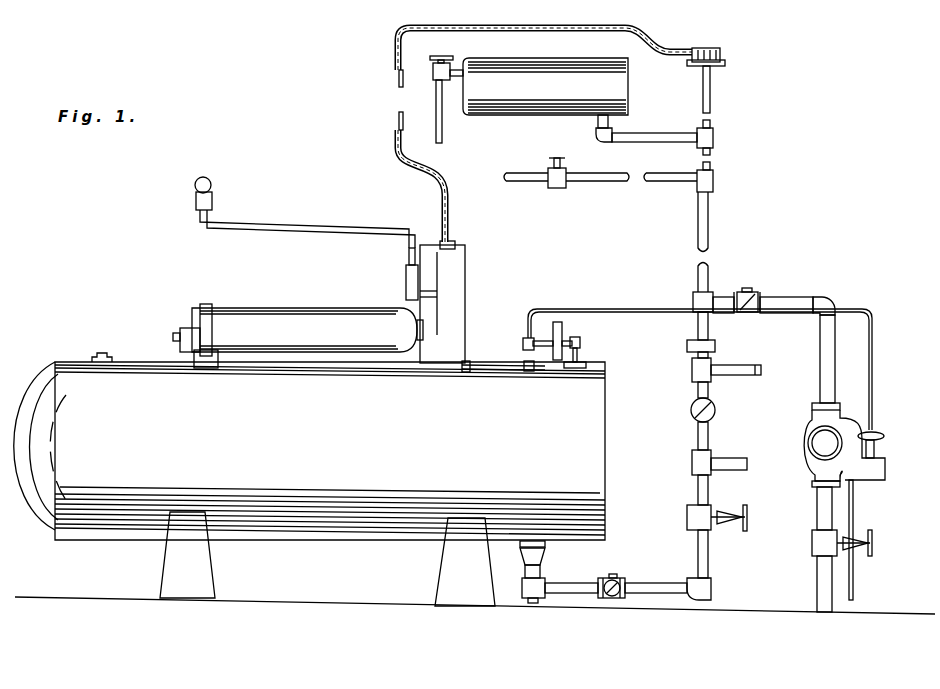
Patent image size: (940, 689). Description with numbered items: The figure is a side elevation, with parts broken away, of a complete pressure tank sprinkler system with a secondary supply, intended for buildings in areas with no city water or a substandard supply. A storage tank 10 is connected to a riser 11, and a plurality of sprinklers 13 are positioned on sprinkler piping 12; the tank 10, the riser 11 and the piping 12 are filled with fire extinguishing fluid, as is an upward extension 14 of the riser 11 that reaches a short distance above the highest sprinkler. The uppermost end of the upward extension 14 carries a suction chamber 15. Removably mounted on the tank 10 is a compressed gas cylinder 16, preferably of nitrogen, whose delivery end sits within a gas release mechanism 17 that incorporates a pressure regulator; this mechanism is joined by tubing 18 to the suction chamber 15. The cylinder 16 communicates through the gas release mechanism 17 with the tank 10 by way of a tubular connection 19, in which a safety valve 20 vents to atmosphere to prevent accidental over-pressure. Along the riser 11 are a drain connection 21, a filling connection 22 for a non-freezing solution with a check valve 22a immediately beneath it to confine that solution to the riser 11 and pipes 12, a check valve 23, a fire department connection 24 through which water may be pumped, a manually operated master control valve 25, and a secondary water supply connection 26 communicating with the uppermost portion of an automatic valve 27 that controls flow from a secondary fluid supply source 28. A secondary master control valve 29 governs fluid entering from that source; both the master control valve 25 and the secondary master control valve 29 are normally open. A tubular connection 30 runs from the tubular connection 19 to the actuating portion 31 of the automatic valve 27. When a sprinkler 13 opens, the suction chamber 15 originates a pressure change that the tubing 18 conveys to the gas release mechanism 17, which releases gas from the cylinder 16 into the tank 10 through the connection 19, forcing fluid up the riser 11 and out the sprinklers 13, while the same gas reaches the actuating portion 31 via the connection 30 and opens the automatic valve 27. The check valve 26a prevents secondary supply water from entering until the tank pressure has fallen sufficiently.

The storage tank 10 is at (352, 457).
The riser 11 is at (697, 483).
The sprinkler piping 12 is at (618, 182).
The sprinkler 13 is at (566, 166).
The upward extension 14 is at (712, 125).
The suction chamber 15 is at (722, 57).
The compressed gas cylinder 16 is at (268, 334).
The gas release mechanism 17 is at (452, 298).
The tubing 18 is at (398, 112).
The tubular connection 19 is at (497, 364).
The safety valve 20 is at (565, 339).
The drain connection 21 is at (543, 583).
The filling connection 22 is at (719, 370).
The check valve 22a is at (714, 409).
The check valve 23 is at (618, 580).
The fire department connection 24 is at (722, 462).
The master control valve 25 is at (722, 517).
The secondary water supply connection 26 is at (780, 302).
The check valve 26a is at (748, 292).
The automatic valve 27 is at (812, 436).
The secondary fluid supply source 28 is at (818, 593).
The secondary master control valve 29 is at (815, 544).
The tubular connection 30 is at (583, 309).
The actuating portion 31 is at (880, 446).